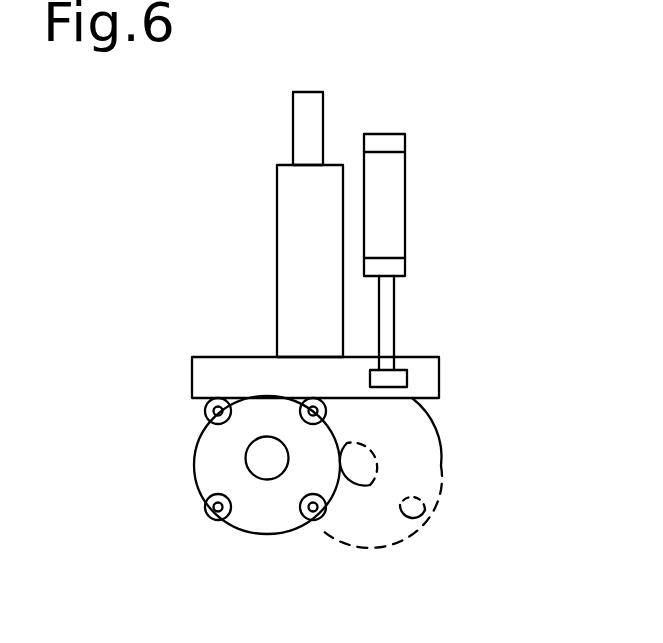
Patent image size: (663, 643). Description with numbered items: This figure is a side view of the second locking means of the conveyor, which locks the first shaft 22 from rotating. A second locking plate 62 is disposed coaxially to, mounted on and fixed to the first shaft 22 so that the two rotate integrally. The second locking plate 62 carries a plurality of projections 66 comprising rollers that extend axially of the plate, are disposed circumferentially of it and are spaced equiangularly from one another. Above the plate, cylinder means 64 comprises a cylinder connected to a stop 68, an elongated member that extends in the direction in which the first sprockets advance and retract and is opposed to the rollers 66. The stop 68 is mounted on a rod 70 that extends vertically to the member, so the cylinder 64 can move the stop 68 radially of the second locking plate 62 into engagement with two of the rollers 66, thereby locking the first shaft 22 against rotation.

The rod 70 is at (302, 123).
The cylinder means 64 is at (392, 195).
The stop 68 is at (242, 370).
The projections 66 is at (209, 419).
The first shaft 22 is at (254, 466).
The second locking plate 62 is at (252, 517).